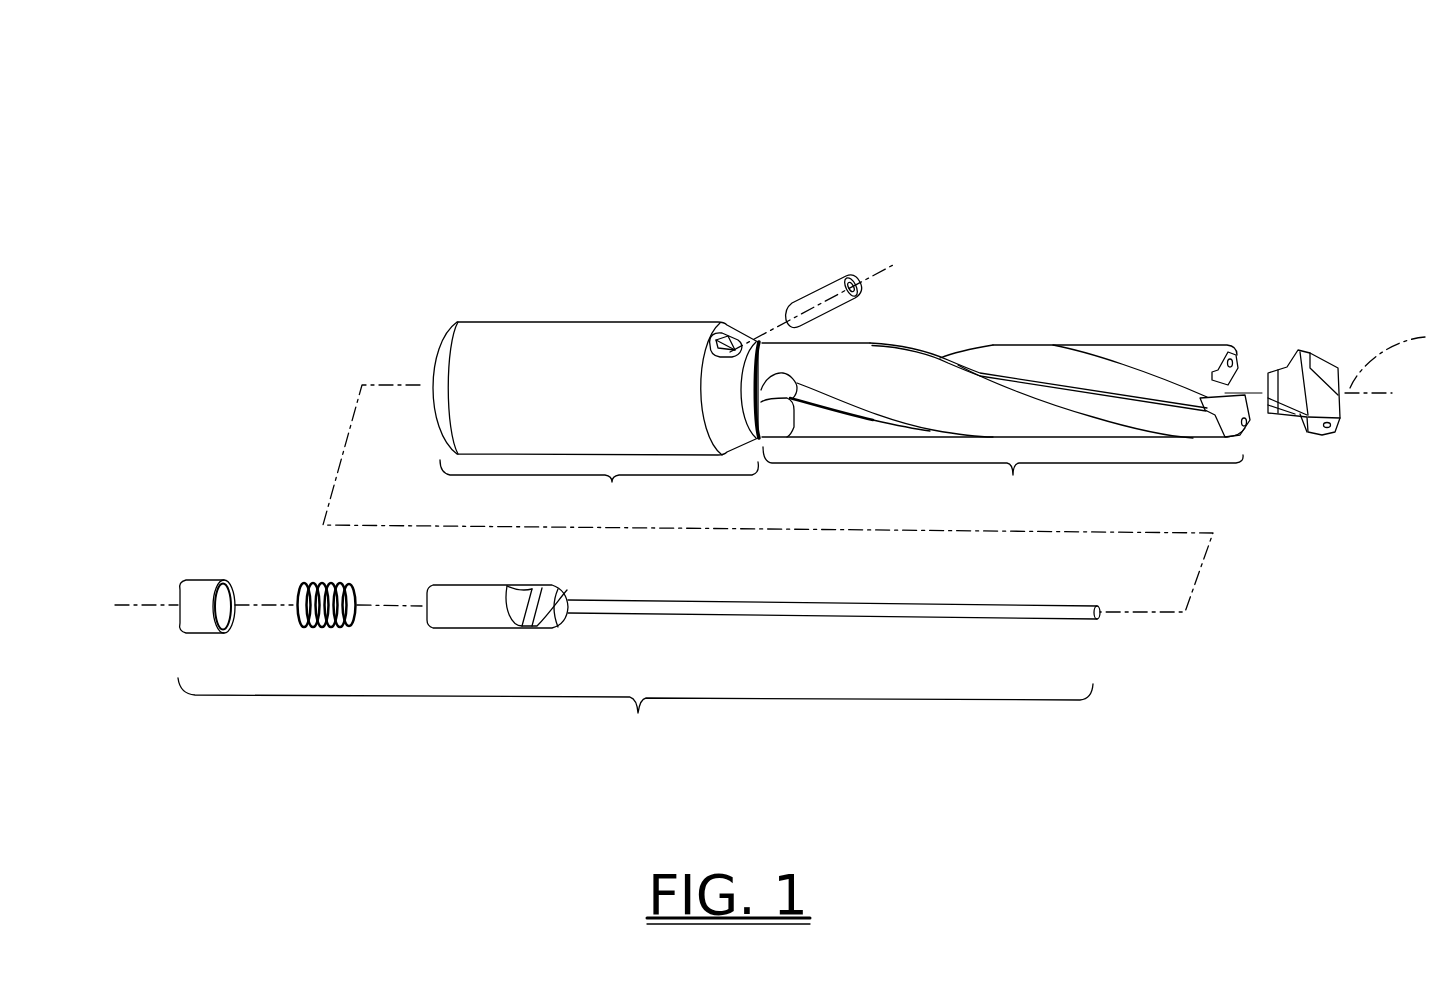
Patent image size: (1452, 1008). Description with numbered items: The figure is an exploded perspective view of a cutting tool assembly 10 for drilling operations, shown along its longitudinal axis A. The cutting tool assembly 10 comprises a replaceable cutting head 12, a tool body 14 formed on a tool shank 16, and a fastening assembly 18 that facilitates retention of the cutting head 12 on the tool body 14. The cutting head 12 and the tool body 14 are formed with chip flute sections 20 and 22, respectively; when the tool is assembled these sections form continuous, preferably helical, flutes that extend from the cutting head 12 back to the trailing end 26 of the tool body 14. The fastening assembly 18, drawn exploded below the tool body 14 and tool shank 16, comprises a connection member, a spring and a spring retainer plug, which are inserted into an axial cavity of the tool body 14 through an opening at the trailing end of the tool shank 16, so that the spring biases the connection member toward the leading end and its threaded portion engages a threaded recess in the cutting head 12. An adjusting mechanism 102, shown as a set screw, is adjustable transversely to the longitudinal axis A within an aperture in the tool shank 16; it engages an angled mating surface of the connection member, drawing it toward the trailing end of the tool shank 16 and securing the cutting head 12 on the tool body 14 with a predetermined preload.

The cutting tool assembly 10 is at (577, 122).
The replaceable cutting head 12 is at (1289, 351).
The tool body 14 is at (1011, 384).
The tool shank 16 is at (605, 360).
The fastening assembly 18 is at (639, 667).
The chip flute section 20 is at (1305, 430).
The chip flute section 22 is at (992, 358).
The trailing end 26 is at (770, 345).
The adjusting mechanism 102 is at (813, 290).